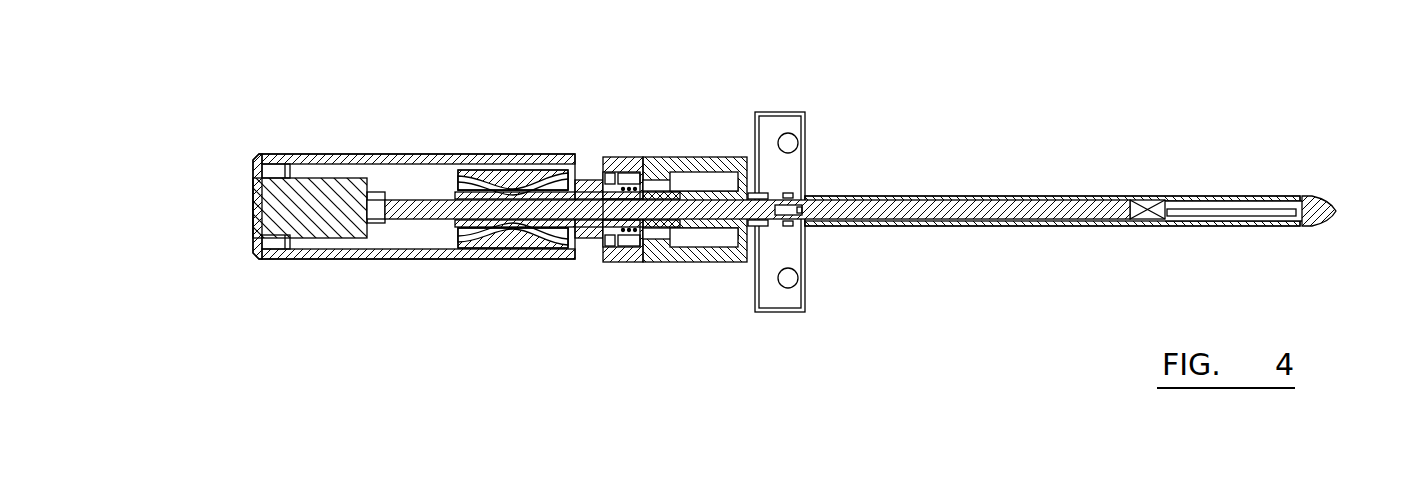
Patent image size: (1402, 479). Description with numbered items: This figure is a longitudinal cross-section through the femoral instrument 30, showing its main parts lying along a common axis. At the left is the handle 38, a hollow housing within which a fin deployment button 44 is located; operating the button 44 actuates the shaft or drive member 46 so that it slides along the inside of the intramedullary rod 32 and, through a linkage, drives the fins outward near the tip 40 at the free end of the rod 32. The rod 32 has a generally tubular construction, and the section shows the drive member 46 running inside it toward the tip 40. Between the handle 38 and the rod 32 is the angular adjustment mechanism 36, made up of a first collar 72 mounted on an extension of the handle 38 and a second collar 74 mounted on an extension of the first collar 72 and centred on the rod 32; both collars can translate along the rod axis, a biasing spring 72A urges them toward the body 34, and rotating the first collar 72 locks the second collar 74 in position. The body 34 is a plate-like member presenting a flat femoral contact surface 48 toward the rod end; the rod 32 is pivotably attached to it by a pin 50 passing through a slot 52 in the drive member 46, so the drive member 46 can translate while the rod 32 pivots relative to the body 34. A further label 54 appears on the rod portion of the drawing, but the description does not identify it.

The instrument 30 is at (754, 194).
The intramedullary rod 32 is at (1090, 224).
The body 34 is at (833, 161).
The angular adjustment mechanism 36 is at (653, 214).
The handle 38 is at (397, 262).
The tip 40 is at (1330, 210).
The button 44 is at (252, 202).
The shaft or drive member 46 is at (417, 197).
The femoral contact surface 48 is at (807, 150).
The pin 50 is at (805, 182).
The slot 52 is at (778, 217).
The inner rod 54 is at (948, 227).
The first collar 72 is at (620, 263).
The biasing spring 72A is at (612, 160).
The second collar 74 is at (713, 263).